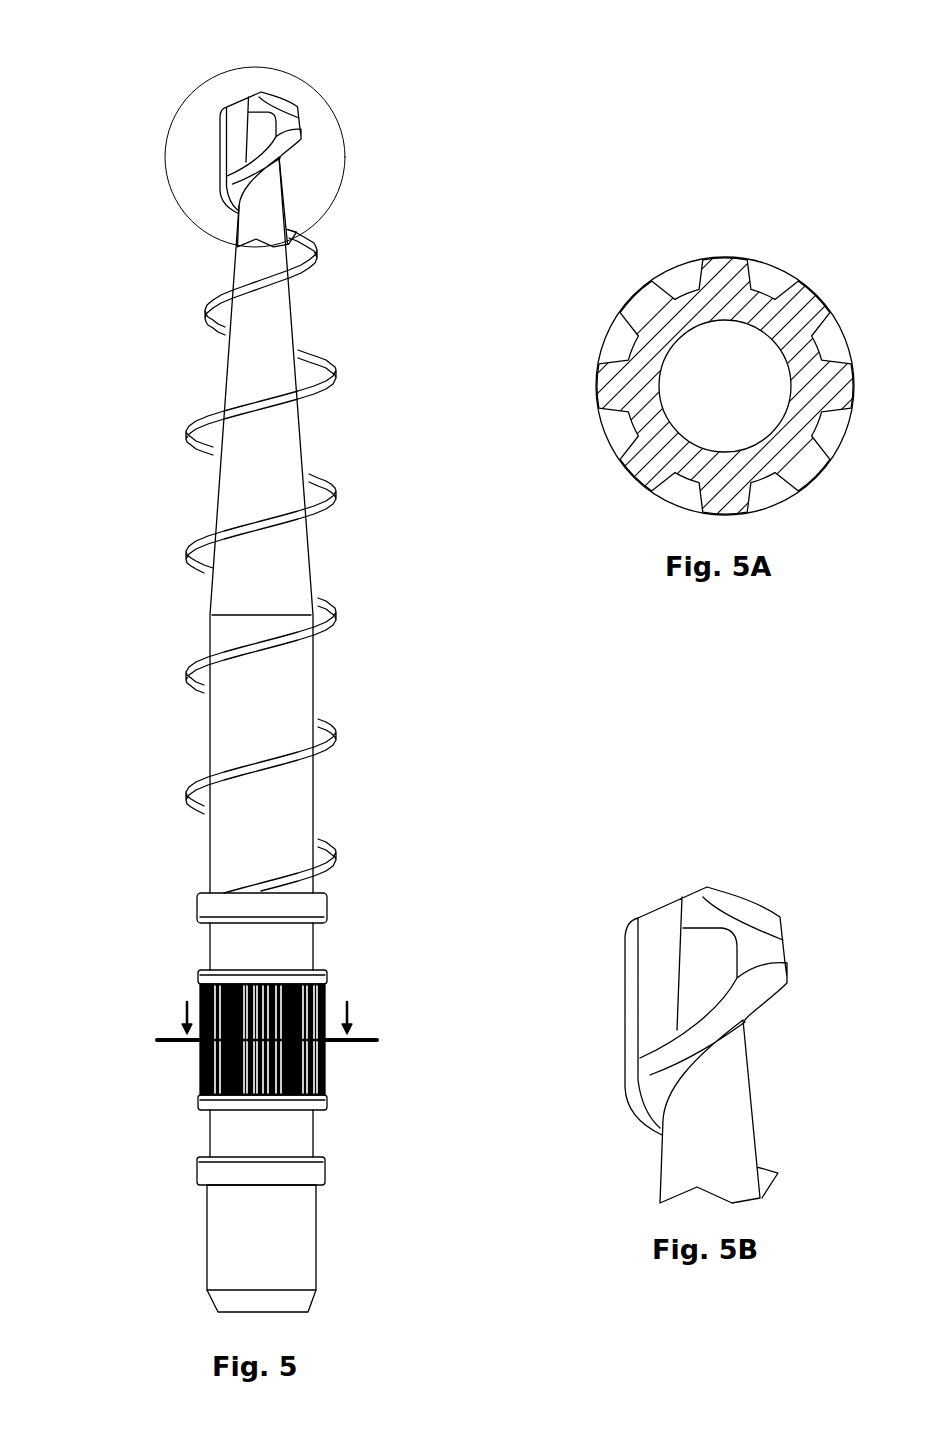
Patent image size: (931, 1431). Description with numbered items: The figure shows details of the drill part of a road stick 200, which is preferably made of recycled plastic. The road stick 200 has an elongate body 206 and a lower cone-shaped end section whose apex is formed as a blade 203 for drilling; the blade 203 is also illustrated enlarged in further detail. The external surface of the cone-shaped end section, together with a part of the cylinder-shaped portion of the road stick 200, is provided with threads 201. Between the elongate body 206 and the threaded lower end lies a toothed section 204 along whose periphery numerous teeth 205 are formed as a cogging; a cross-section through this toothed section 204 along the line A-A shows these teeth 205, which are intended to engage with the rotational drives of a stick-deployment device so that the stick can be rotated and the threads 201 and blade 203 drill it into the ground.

In FIG. 5, the road stick 200 is at (125, 712).
In FIG. 5, the threads 201 is at (299, 380).
In FIG. 5, the blade 203 is at (247, 135).
In FIG. 5B, the blade 203 is at (654, 903).
In FIG. 5, the knurled gear section 204 is at (203, 1056).
In FIG. 5A, the knurled gear section 204 is at (730, 241).
In FIG. 5A, the teeth 205 is at (612, 388).
In FIG. 5, the elongate body 206 is at (258, 1245).